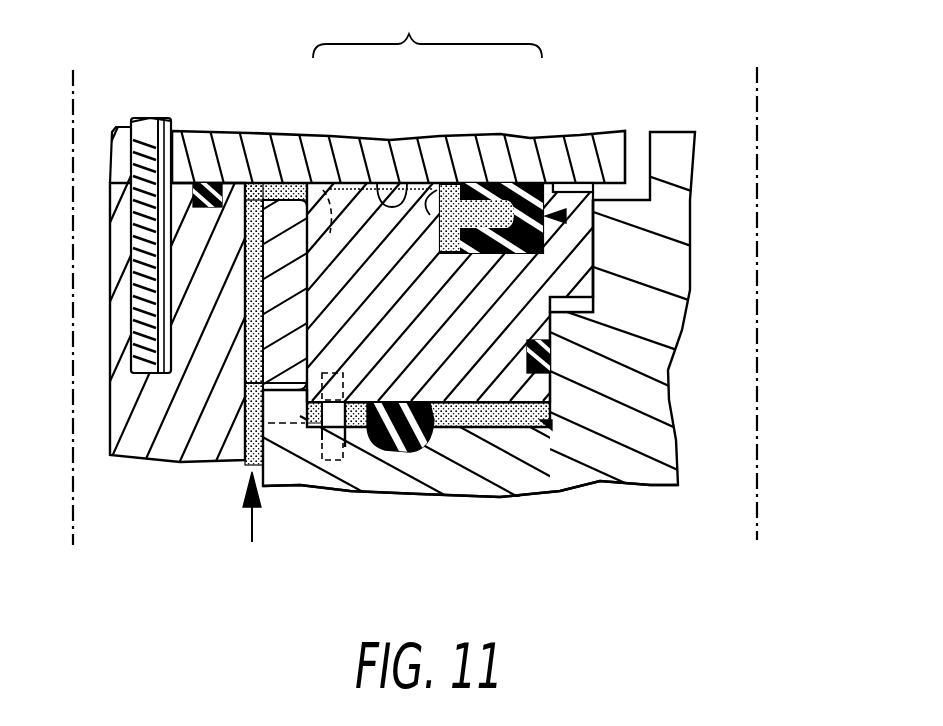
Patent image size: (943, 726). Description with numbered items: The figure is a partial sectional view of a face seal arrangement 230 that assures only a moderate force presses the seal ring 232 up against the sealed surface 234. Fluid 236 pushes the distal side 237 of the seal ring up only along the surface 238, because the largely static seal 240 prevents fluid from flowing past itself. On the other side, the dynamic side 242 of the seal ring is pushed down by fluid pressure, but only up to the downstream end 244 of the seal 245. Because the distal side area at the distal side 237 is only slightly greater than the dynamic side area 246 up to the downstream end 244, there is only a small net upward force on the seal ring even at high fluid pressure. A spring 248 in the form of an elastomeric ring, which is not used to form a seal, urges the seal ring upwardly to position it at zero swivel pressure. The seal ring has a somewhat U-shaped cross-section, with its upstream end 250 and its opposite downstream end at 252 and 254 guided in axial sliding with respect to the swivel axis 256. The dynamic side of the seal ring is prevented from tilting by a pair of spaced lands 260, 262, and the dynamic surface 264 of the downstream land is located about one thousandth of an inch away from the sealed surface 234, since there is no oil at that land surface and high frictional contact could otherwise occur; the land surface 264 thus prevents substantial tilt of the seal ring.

The face seal arrangement 230 is at (600, 481).
The seal ring 232 is at (517, 437).
The sealed surface 234 is at (400, 190).
The fluid 236 is at (347, 447).
The distal side 237 is at (497, 430).
The surface 238 is at (445, 430).
The static seal 240 is at (577, 347).
The dynamic side 242 is at (343, 183).
The downstream end 244 is at (545, 183).
The seal 245 is at (565, 216).
The dynamic side area 246 is at (427, 29).
The spring 248 is at (400, 452).
The upstream end 250 is at (245, 383).
The downstream end 252 is at (597, 312).
The downstream end 254 is at (597, 270).
The swivel axis 256 is at (76, 95).
The land 260 is at (317, 183).
The land 262 is at (455, 200).
The dynamic surface 264 is at (583, 192).